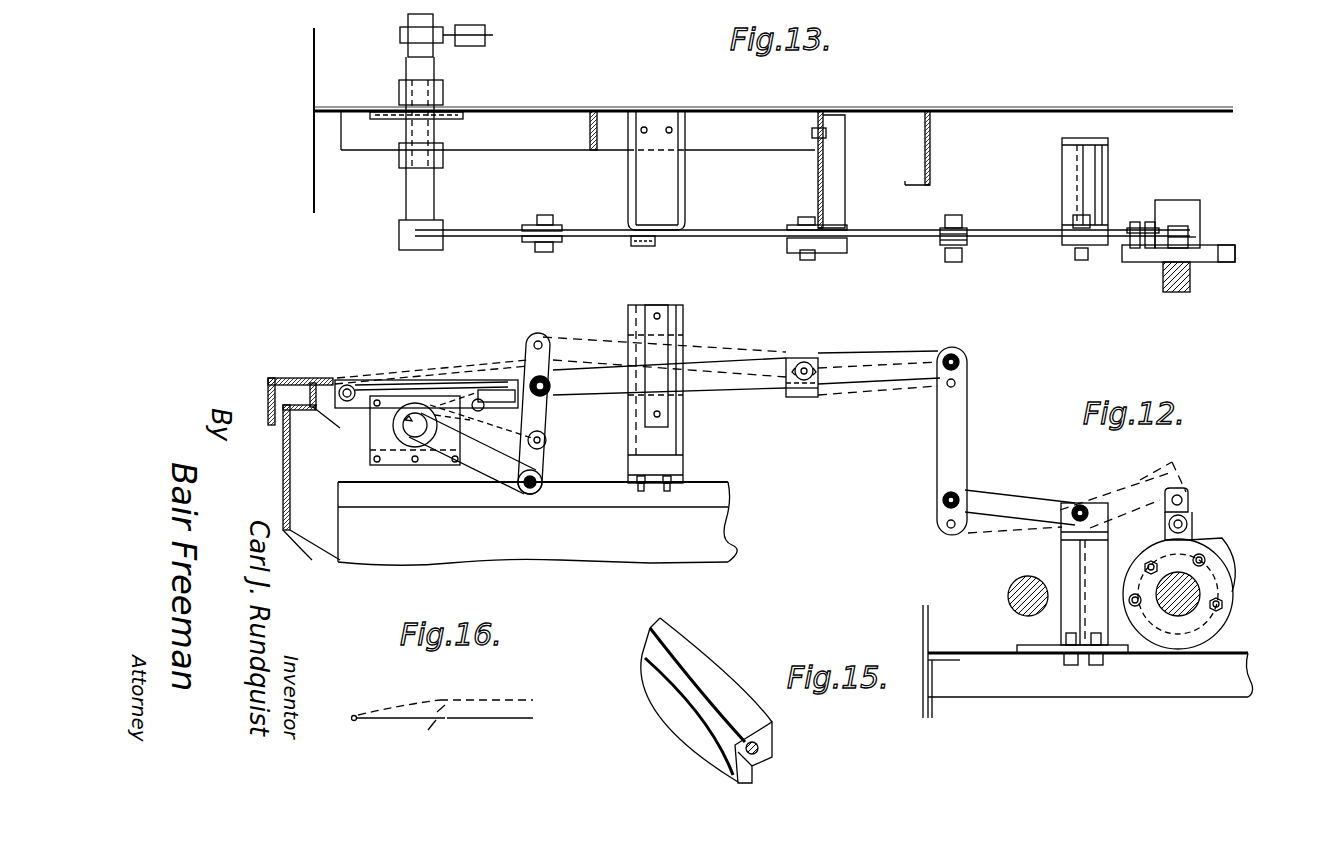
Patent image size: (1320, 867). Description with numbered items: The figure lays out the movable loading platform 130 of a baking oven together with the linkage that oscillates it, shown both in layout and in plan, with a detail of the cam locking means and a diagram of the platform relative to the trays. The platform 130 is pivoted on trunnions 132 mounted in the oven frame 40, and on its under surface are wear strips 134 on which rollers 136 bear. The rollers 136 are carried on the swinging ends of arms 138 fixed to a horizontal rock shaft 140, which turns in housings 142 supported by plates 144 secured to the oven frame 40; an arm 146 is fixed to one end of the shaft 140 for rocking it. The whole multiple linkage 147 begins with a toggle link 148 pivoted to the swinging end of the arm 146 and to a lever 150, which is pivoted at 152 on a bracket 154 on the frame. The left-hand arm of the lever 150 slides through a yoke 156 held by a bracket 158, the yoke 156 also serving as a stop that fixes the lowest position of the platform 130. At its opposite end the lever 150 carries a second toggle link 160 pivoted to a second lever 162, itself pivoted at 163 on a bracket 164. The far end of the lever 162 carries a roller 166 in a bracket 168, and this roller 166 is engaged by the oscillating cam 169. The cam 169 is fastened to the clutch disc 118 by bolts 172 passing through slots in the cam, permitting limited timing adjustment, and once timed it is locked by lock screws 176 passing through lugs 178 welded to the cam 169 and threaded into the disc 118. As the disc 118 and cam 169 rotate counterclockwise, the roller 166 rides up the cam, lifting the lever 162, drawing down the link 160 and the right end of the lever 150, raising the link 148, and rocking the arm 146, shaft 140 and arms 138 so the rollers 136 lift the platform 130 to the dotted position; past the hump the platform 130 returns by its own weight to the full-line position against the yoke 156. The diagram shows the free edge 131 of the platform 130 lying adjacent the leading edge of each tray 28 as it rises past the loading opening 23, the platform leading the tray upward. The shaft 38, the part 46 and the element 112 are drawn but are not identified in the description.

In FIG. 12, the loading opening 23 is at (305, 380).
In FIG. 16, the trays 28 is at (478, 704).
In FIG. 13, the shaft 38 is at (1190, 283).
In FIG. 12, the shaft 38 is at (1202, 590).
In FIG. 13, the oven frame 40 is at (563, 127).
In FIG. 12, the oven frame 40 is at (720, 521).
In FIG. 12, the shaft 46 is at (1006, 597).
In FIG. 12, the pin 112 is at (1128, 603).
In FIG. 13, the clutch disc 118 is at (1235, 255).
In FIG. 12, the clutch disc 118 is at (1232, 638).
In FIG. 15, the clutch disc 118 is at (690, 682).
In FIG. 12, the movable platform 130 is at (430, 378).
In FIG. 16, the movable platform 130 is at (394, 716).
In FIG. 16, the free edge 131 is at (440, 712).
In FIG. 12, the trunnions 132 is at (348, 384).
In FIG. 16, the trunnions 132 is at (352, 722).
In FIG. 12, the wear strips 134 is at (368, 376).
In FIG. 13, the rollers 136 is at (493, 38).
In FIG. 12, the rollers 136 is at (479, 392).
In FIG. 13, the arms 138 is at (470, 27).
In FIG. 12, the arms 138 is at (546, 394).
In FIG. 13, the rock shaft 140 is at (430, 190).
In FIG. 12, the rock shaft 140 is at (393, 432).
In FIG. 13, the housings 142 is at (443, 163).
In FIG. 13, the plates 144 is at (382, 118).
In FIG. 12, the plates 144 is at (369, 442).
In FIG. 13, the arm 146 is at (486, 240).
In FIG. 12, the arm 146 is at (480, 470).
In FIG. 13, the multiple linkage 147 is at (887, 264).
In FIG. 12, the multiple linkage 147 is at (990, 358).
In FIG. 13, the toggle link 148 is at (560, 250).
In FIG. 12, the toggle link 148 is at (546, 461).
In FIG. 13, the lever 150 is at (718, 237).
In FIG. 12, the lever 150 is at (738, 392).
In FIG. 13, the pivot 152 is at (815, 256).
In FIG. 12, the pivot 152 is at (807, 362).
In FIG. 13, the bracket 154 is at (787, 250).
In FIG. 12, the bracket 154 is at (793, 398).
In FIG. 13, the yoke 156 is at (640, 246).
In FIG. 12, the yoke 156 is at (660, 358).
In FIG. 13, the bracket 158 is at (628, 195).
In FIG. 12, the bracket 158 is at (636, 327).
In FIG. 13, the second toggle link 160 is at (965, 245).
In FIG. 12, the second toggle link 160 is at (937, 448).
In FIG. 13, the second lever 162 is at (1005, 236).
In FIG. 12, the second lever 162 is at (1003, 494).
In FIG. 13, the pivot 163 is at (1078, 262).
In FIG. 12, the pivot 163 is at (1080, 506).
In FIG. 13, the bracket 164 is at (1068, 188).
In FIG. 12, the bracket 164 is at (1062, 556).
In FIG. 13, the roller 166 is at (1198, 232).
In FIG. 12, the roller 166 is at (1190, 526).
In FIG. 13, the bracket 168 is at (1190, 235).
In FIG. 12, the bracket 168 is at (1189, 498).
In FIG. 13, the oscillating cam 169 is at (1226, 248).
In FIG. 12, the oscillating cam 169 is at (1228, 546).
In FIG. 15, the oscillating cam 169 is at (673, 633).
In FIG. 12, the bolts 172 is at (1147, 560).
In FIG. 12, the lock screws 176 is at (1224, 606).
In FIG. 15, the lock screws 176 is at (760, 752).
In FIG. 12, the lugs 178 is at (1222, 625).
In FIG. 15, the lugs 178 is at (773, 734).